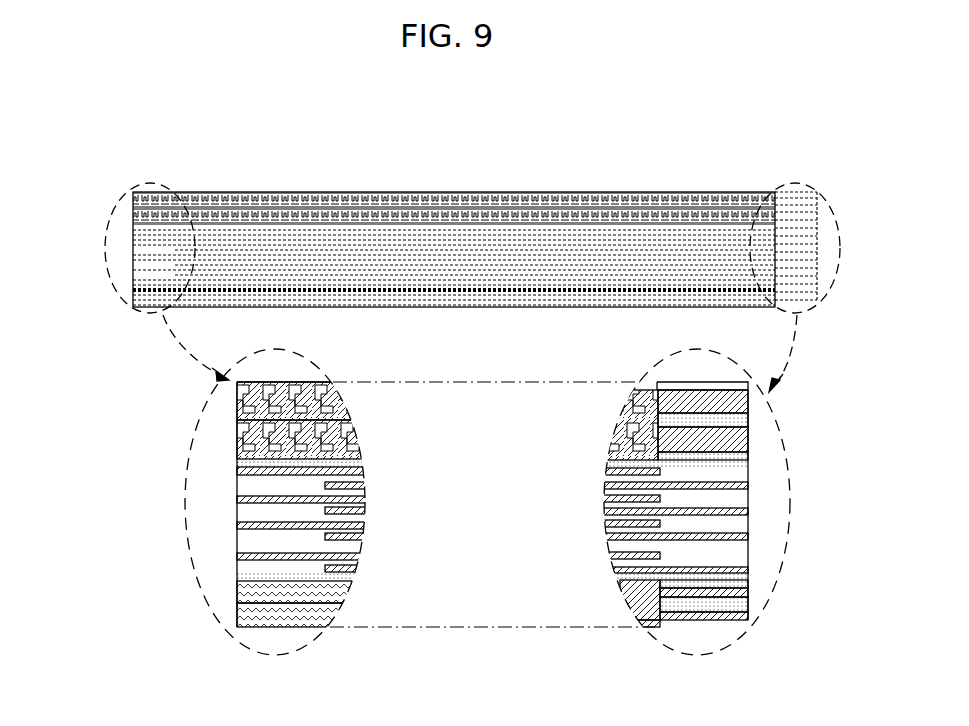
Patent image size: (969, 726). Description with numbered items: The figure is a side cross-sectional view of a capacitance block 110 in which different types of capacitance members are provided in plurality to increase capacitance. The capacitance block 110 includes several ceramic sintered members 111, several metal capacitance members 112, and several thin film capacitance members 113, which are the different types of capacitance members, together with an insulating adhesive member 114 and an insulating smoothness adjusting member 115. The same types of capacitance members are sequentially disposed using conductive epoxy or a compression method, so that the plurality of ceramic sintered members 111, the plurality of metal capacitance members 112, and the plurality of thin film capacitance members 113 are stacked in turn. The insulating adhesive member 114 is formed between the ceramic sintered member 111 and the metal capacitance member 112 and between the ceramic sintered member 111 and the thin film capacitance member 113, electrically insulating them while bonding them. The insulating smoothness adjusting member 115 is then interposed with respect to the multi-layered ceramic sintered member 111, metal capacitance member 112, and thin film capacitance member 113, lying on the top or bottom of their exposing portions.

The capacitance block 110 is at (237, 627).
The ceramic sintered member 111 is at (237, 572).
The metal capacitance member 112 is at (237, 459).
The thin film capacitance member 113 is at (237, 603).
The insulating adhesive member 114 is at (748, 612).
The insulating smoothness adjusting member 115 is at (748, 590).